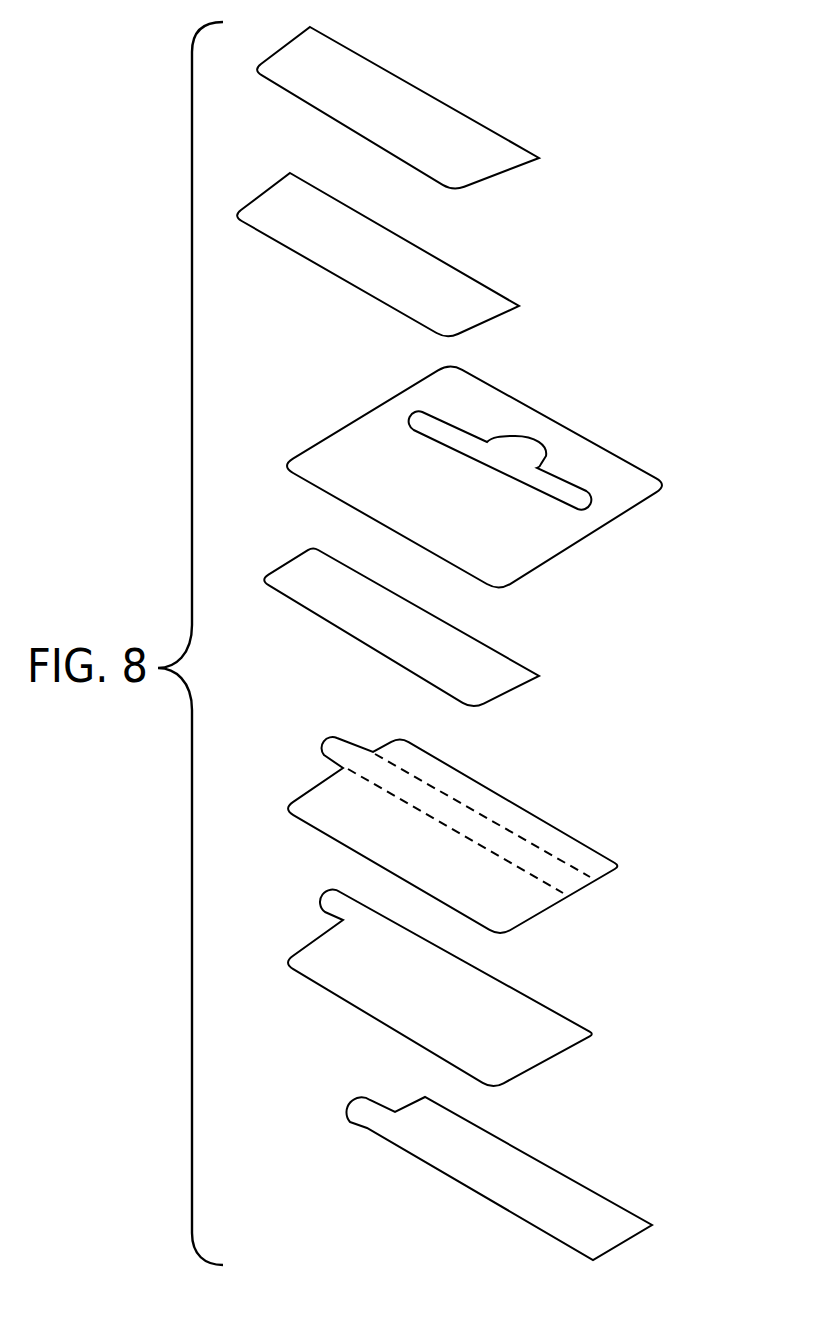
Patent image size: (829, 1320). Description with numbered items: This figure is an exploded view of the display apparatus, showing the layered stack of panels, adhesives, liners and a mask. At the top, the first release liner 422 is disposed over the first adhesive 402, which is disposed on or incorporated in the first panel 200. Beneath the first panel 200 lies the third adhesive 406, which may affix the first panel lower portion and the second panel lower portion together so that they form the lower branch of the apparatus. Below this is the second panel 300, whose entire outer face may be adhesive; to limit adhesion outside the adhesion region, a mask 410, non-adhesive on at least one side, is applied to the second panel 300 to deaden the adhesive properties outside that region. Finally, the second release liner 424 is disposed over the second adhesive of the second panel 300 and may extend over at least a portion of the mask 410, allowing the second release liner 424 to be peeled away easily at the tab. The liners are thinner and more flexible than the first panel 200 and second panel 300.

The first release liner 422 is at (507, 153).
The first adhesive 402 is at (490, 300).
The first panel 200 is at (643, 483).
The third adhesive 406 is at (513, 670).
The second panel 300 is at (600, 863).
The mask 410 is at (563, 1027).
The second release liner 424 is at (620, 1220).